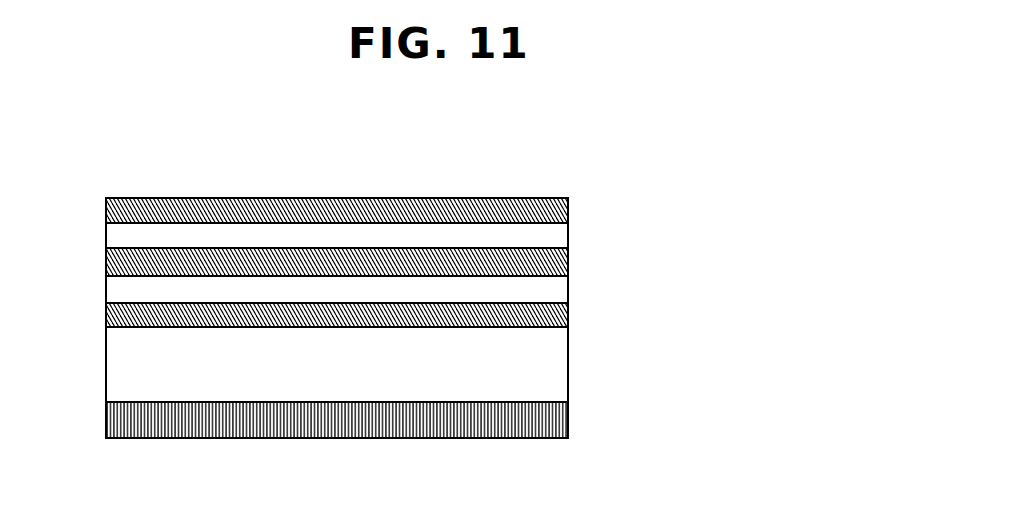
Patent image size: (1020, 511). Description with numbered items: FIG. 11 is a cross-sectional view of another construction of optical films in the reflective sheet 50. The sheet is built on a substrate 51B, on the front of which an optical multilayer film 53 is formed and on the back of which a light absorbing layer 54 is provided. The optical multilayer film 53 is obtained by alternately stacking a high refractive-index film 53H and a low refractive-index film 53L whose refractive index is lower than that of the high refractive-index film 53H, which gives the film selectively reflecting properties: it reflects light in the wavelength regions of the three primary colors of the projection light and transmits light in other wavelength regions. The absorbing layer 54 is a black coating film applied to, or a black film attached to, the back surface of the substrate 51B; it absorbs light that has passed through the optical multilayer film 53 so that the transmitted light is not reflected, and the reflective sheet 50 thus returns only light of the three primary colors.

The reflective sheet 50 is at (338, 157).
The optical multilayer film 53 is at (428, 242).
The high refractive-index film 53H is at (560, 207).
The low refractive-index film 53L is at (560, 242).
The substrate 51B is at (560, 373).
The light absorbing layer 54 is at (560, 417).